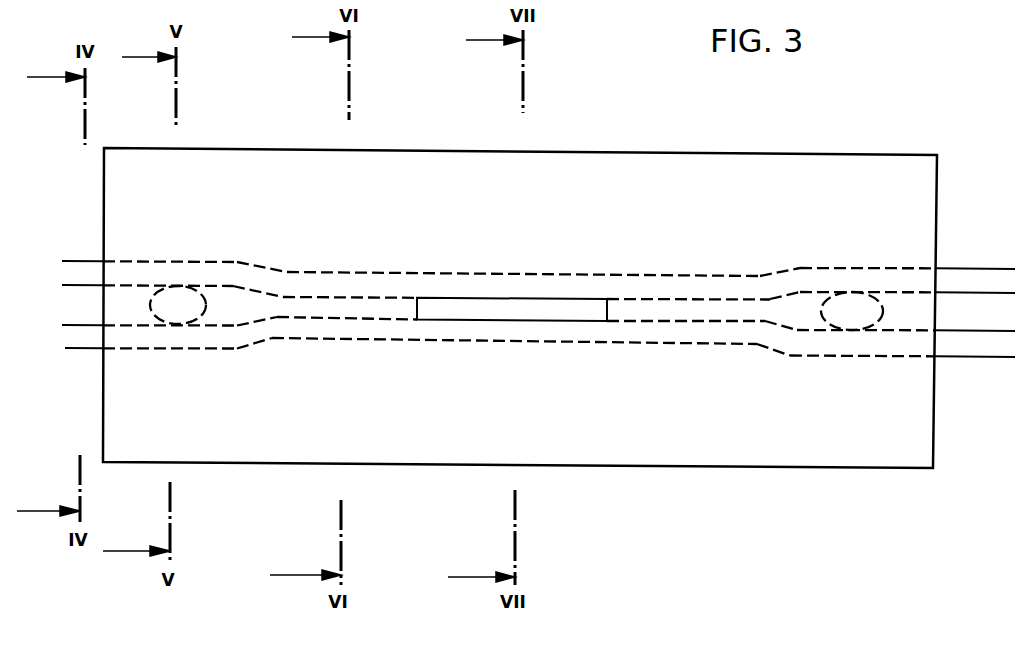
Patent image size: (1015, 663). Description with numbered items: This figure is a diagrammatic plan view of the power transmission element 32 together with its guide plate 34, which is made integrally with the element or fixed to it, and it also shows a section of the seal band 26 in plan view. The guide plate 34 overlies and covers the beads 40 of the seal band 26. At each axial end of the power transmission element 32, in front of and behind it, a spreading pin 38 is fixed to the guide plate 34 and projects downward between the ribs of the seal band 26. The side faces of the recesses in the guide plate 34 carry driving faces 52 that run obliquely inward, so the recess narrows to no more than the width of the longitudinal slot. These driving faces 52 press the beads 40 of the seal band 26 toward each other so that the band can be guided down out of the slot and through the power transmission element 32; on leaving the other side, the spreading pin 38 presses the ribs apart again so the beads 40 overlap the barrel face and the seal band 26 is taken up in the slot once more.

The seal band 26 is at (848, 362).
The power transmission element 32 is at (459, 311).
The guide plate 34 is at (473, 216).
The spreading pin 38 is at (176, 298).
The beads 40 is at (561, 336).
The driving faces 52 is at (266, 272).